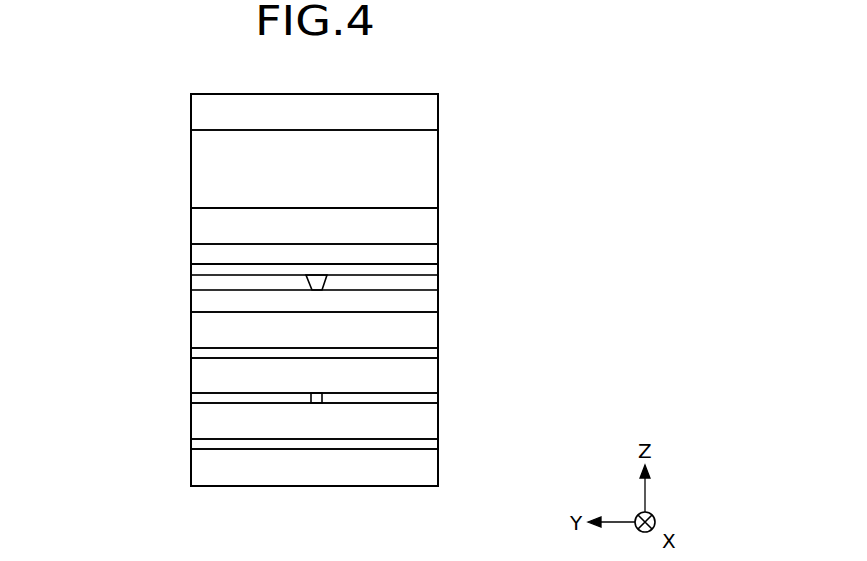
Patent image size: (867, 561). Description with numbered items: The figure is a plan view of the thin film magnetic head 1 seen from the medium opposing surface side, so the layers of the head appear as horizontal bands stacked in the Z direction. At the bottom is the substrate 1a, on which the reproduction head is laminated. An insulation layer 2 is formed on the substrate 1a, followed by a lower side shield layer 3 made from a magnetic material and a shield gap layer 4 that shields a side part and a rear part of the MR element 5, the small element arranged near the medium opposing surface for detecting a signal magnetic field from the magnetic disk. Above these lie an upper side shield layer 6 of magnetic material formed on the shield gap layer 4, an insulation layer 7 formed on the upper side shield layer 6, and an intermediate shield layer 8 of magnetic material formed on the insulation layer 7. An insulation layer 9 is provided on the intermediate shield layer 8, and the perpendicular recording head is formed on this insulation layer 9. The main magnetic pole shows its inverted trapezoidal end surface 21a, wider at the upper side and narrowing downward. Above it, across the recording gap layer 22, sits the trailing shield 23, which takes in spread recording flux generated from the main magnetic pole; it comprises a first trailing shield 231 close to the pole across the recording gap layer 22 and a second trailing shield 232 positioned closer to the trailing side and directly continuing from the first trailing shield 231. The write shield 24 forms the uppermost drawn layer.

The thin film magnetic head 1 is at (549, 102).
The substrate 1a is at (430, 473).
The insulation layer 2 is at (430, 445).
The lower side shield layer 3 is at (202, 428).
The shield gap layer 4 is at (430, 400).
The MR element 5 is at (317, 403).
The upper side shield layer 6 is at (202, 380).
The insulation layer 7 is at (430, 352).
The intermediate shield layer 8 is at (202, 333).
The insulation layer 9 is at (430, 303).
The end surface 21a is at (318, 283).
The recording gap layer 22 is at (202, 273).
The trailing shield 23 is at (83, 202).
The first trailing shield 231 is at (203, 258).
The second trailing shield 232 is at (208, 228).
The write shield 24 is at (425, 170).